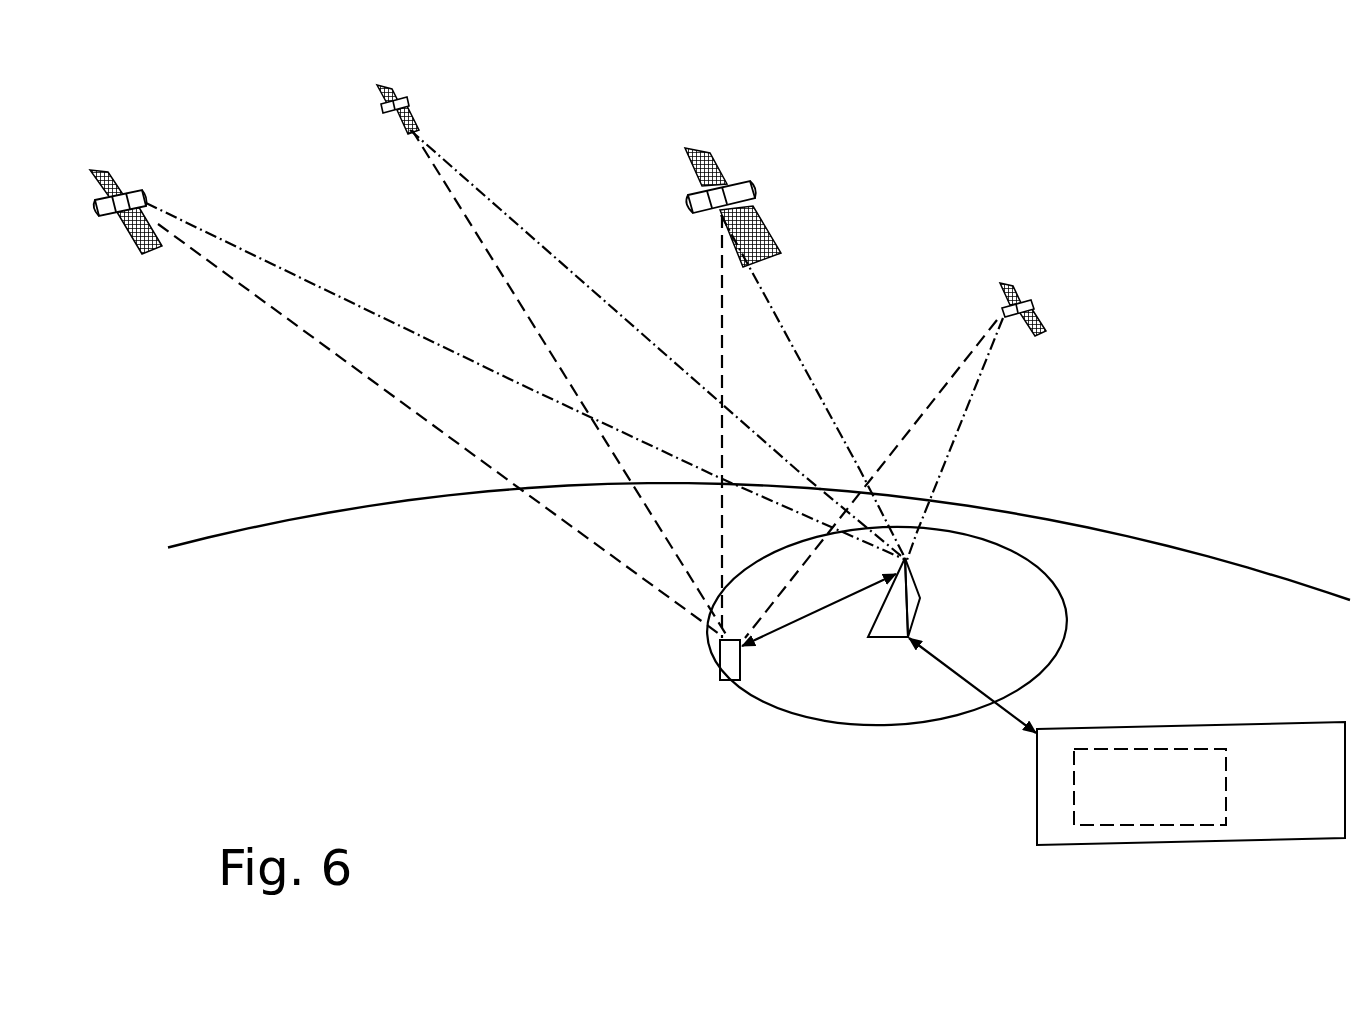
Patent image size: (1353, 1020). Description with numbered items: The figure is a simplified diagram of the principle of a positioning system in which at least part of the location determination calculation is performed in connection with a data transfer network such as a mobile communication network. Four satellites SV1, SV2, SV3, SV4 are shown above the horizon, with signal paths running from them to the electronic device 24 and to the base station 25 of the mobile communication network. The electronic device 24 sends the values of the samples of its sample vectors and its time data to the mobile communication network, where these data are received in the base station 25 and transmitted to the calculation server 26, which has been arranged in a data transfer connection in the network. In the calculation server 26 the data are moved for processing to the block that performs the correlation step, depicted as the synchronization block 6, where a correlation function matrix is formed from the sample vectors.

The synchronization block 6 is at (1155, 749).
The electronic device 24 is at (721, 681).
The base station 25 is at (913, 590).
The calculation server 26 is at (1037, 827).
The satellite 1 SV1 is at (98, 192).
The satellite 2 SV2 is at (387, 87).
The satellite 3 SV3 is at (732, 185).
The satellite 4 SV4 is at (1034, 282).